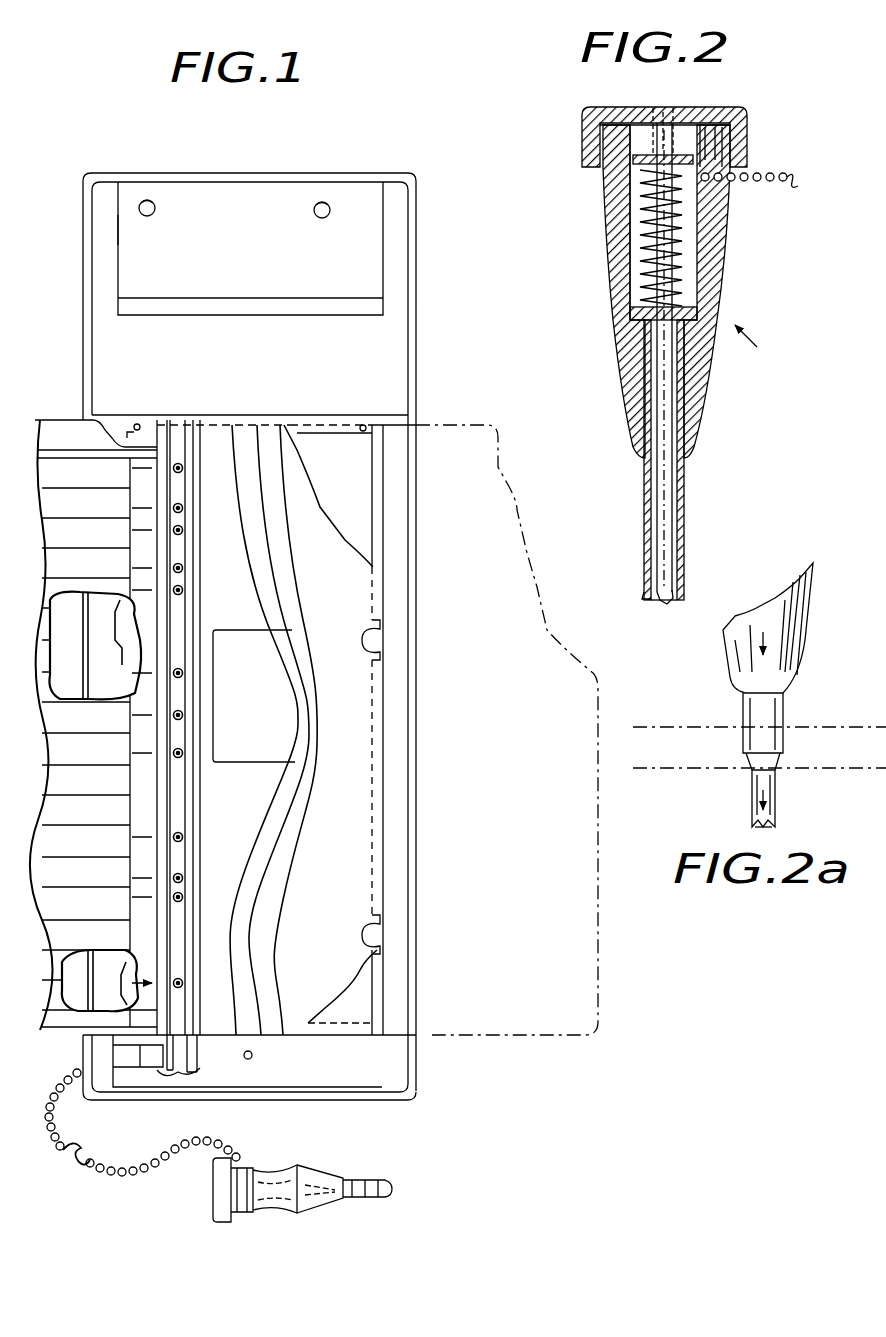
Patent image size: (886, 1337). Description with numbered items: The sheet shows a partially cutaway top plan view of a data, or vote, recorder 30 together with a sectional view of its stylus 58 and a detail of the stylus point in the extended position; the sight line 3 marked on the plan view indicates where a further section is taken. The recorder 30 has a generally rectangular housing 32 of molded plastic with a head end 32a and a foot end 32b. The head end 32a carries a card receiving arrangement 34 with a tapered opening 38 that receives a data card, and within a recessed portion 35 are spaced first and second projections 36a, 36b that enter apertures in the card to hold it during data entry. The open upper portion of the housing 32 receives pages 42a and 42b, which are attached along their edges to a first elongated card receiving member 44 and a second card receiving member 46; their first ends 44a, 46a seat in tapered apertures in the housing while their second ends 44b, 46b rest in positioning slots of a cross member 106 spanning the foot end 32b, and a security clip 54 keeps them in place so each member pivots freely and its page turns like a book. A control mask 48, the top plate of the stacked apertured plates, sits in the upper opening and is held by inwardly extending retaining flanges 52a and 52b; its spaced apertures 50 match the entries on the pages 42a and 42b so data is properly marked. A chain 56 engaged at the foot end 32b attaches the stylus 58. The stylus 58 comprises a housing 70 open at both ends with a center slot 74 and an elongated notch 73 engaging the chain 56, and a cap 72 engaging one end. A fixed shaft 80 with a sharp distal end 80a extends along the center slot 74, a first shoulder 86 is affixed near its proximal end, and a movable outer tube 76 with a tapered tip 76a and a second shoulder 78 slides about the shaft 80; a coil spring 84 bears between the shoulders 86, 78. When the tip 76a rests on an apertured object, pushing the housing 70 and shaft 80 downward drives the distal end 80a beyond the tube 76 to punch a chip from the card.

In FIG. 1, the sight line 3— 3 is at (270, 167).
In FIG. 1, the data recorder 30 is at (436, 1060).
In FIG. 1, the housing 32 is at (268, 643).
In FIG. 1, the head end 32a is at (249, 296).
In FIG. 1, the foot end 32b is at (249, 1067).
In FIG. 1, the card receiving arrangement 34 is at (222, 155).
In FIG. 1, the recessed portion 35 is at (127, 232).
In FIG. 1, the first projection 36a is at (146, 200).
In FIG. 1, the second projection 36b is at (324, 202).
In FIG. 1, the tapered opening 38 is at (240, 304).
In FIG. 1, the page 42a is at (68, 508).
In FIG. 1, the page 42b is at (283, 457).
In FIG. 1, the first elongated card receiving member 44 is at (125, 754).
In FIG. 1, the first end of first card receiving member 44a is at (172, 388).
In FIG. 1, the second end of first card receiving member 44b is at (165, 1062).
In FIG. 1, the second card receiving member 46 is at (212, 734).
In FIG. 1, the first end of second card receiving member 46a is at (190, 412).
In FIG. 1, the second end of second card receiving member 46b is at (203, 1048).
In FIG. 1, the control mask 48 is at (182, 407).
In FIG. 1, the spaced apertures 50 is at (184, 510).
In FIG. 1, the retaining flange 52a is at (122, 632).
In FIG. 1, the retaining flange 52b is at (127, 932).
In FIG. 1, the security clip 54 is at (325, 1067).
In FIG. 1, the chain 56 is at (155, 1165).
In FIG. 2, the chain 56 is at (778, 182).
In FIG. 1, the stylus 58 is at (318, 1212).
In FIG. 2, the stylus 58 is at (751, 352).
In FIG. 1, the cross member 106 is at (125, 1055).
In FIG. 2, the stylus housing 70 is at (613, 247).
In FIG. 2a, the stylus housing 70 is at (817, 587).
In FIG. 2, the cap 72 is at (770, 88).
In FIG. 2, the elongated notch 73 is at (722, 130).
In FIG. 2, the center slot 74 is at (635, 203).
In FIG. 2, the movable outer tube 76 is at (685, 503).
In FIG. 2a, the movable outer tube 76 is at (783, 713).
In FIG. 2, the tapered tip 76a is at (642, 596).
In FIG. 2, the second shoulder 78 is at (622, 314).
In FIG. 2, the fixed shaft 80 is at (672, 410).
In FIG. 2a, the fixed shaft 80 is at (775, 806).
In FIG. 2, the distal end of fixed shaft 80a is at (666, 604).
In FIG. 2a, the distal end of fixed shaft 80a is at (760, 822).
In FIG. 2, the coil spring 84 is at (680, 254).
In FIG. 2, the first shoulder 86 is at (640, 152).